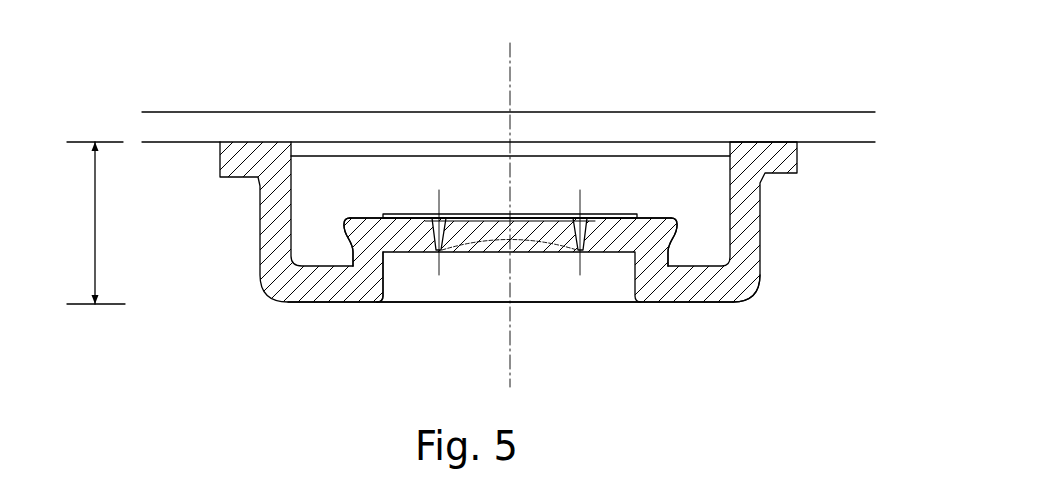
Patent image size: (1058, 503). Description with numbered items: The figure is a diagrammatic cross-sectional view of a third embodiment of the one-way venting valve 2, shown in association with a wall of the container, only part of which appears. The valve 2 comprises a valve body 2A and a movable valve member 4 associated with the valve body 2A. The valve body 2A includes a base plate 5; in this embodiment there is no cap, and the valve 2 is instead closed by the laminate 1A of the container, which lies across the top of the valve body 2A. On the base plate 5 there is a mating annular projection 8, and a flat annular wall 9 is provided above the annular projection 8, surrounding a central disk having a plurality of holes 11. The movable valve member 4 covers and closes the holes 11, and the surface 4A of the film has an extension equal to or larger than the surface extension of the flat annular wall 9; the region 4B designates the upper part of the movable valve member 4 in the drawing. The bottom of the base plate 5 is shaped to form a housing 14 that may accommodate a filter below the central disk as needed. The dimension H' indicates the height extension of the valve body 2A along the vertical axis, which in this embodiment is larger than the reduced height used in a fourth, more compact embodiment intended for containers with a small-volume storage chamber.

The wall 1A is at (170, 112).
The one-way venting valve 2 is at (752, 83).
The valve body 2A is at (750, 290).
The movable valve member 4 is at (628, 213).
The surface of the film 4A is at (377, 228).
The holder upper portion 4B is at (392, 213).
The base plate 5 is at (703, 303).
The annular projection 8 is at (663, 230).
The flat annular wall 9 is at (620, 220).
The holes 11 is at (578, 255).
The housing 14 is at (416, 296).
The height extension H' is at (132, 223).